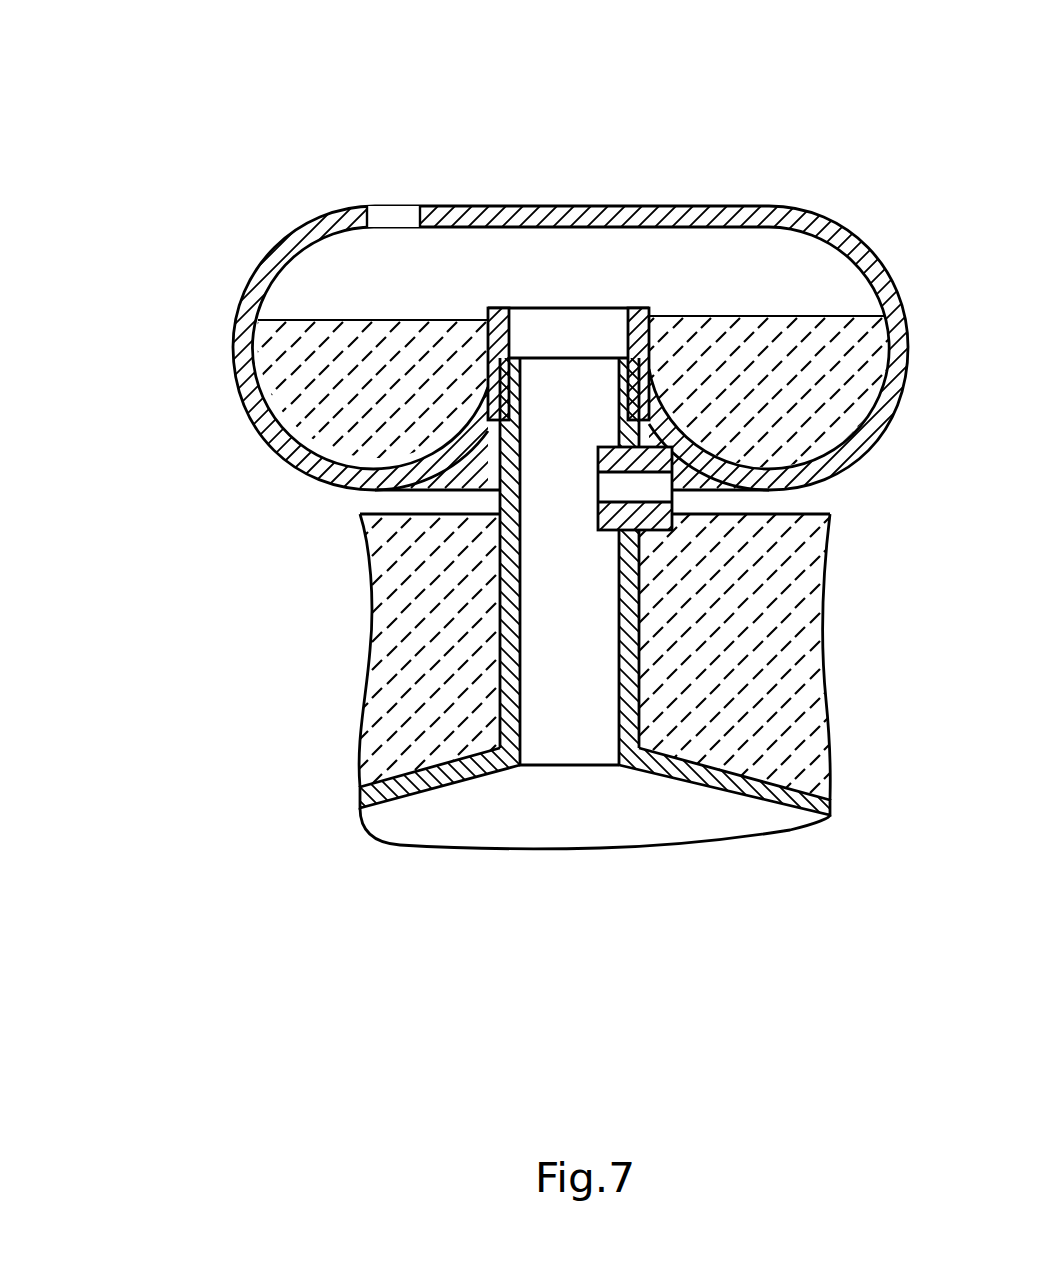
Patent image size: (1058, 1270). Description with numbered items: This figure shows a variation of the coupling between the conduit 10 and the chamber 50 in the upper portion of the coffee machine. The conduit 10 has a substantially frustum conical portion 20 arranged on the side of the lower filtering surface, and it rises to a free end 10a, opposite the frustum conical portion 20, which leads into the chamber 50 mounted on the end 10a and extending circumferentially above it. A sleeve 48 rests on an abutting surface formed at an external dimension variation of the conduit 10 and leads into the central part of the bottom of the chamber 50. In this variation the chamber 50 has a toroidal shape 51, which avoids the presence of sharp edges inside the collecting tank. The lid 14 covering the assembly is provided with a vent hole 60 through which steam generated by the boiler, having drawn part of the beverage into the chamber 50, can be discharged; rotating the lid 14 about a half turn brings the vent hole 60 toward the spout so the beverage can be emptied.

The conduit 10 is at (579, 753).
The end 10a is at (622, 420).
The lid 14 is at (587, 206).
The frustum conical portion 20 is at (772, 802).
The sleeve 48 is at (503, 306).
The chamber 50 is at (233, 375).
The toroidal shape 51 is at (690, 493).
The vent hole 60 is at (398, 206).